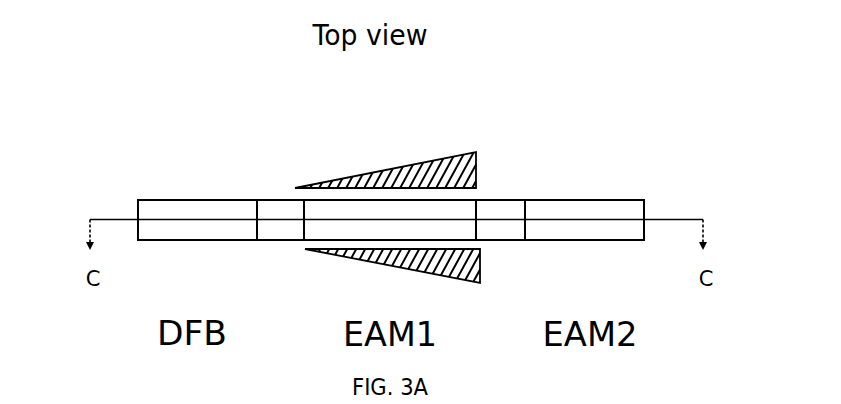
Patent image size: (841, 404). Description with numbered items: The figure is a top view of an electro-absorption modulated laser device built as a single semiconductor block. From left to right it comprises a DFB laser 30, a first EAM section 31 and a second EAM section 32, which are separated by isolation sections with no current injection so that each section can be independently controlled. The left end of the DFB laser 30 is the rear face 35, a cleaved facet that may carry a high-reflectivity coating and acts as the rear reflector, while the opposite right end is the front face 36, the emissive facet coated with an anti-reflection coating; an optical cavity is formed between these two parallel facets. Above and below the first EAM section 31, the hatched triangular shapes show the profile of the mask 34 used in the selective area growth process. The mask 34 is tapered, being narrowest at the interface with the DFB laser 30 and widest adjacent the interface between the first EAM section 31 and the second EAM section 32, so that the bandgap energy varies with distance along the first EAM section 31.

The DFB laser 30 is at (199, 181).
The first EAM section 31 is at (439, 131).
The second EAM section 32 is at (591, 183).
The mask 34 is at (477, 151).
The rear face 35 is at (137, 210).
The front face 36 is at (645, 210).